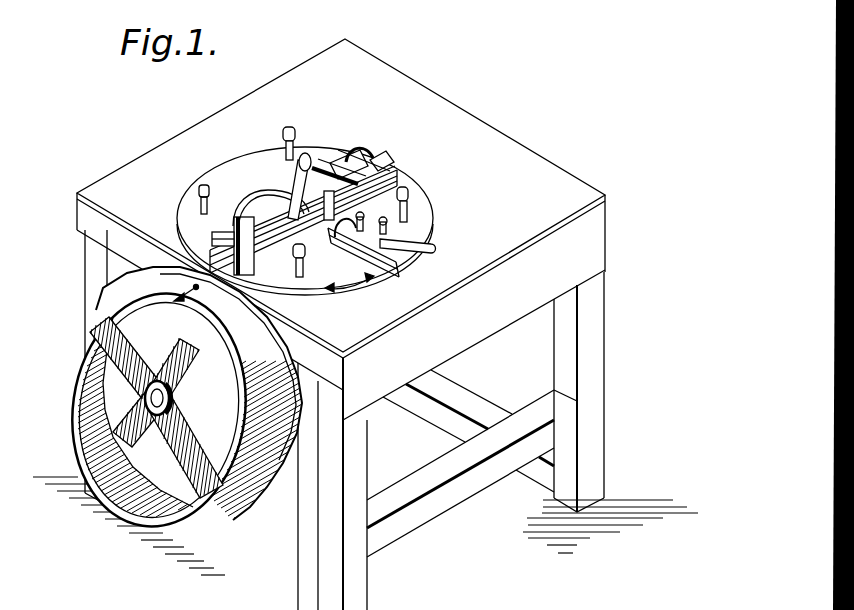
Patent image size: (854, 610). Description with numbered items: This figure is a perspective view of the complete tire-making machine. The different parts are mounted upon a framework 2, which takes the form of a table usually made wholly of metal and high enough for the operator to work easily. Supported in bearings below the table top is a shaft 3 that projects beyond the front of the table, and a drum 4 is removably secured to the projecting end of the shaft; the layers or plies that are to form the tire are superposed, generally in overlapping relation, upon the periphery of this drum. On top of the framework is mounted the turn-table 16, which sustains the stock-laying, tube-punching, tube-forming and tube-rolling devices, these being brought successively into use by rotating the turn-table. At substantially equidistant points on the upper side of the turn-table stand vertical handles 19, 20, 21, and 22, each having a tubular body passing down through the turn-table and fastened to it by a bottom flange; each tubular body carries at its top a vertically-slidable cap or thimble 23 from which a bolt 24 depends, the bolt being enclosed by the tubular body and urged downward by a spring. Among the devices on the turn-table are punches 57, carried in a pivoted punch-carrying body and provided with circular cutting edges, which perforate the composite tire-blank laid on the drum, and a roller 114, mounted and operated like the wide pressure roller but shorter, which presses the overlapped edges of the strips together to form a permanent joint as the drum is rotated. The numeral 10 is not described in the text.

The framework 2 is at (467, 130).
The shaft 3 is at (145, 418).
The drum 4 is at (180, 402).
The base bar 10 is at (215, 252).
The turn-table 16 is at (379, 252).
The vertical handle 19 is at (300, 262).
The vertical handle 20 is at (408, 203).
The vertical handle 21 is at (297, 138).
The vertical handle 22 is at (199, 196).
The cap or thimble 23 is at (205, 191).
The bolt 24 is at (211, 232).
The punch 57 is at (197, 304).
The roller 114 is at (385, 176).